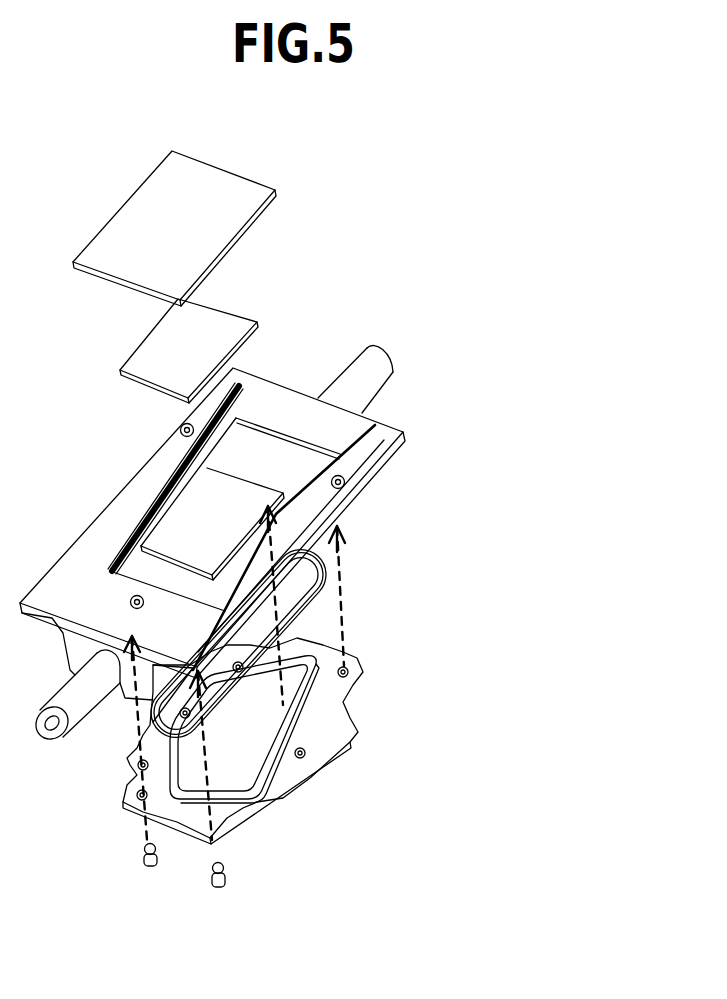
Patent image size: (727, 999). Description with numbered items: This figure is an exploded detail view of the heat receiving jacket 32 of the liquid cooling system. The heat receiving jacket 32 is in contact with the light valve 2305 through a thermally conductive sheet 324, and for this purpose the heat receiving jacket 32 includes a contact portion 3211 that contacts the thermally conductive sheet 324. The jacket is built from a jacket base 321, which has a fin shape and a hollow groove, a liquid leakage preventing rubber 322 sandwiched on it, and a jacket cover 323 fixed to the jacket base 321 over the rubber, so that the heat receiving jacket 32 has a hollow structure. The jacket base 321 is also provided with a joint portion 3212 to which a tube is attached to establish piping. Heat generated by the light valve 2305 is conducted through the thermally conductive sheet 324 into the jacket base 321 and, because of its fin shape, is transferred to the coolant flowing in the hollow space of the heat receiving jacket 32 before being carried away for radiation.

The light valve 2305 is at (225, 220).
The heat receiving jacket 32 is at (312, 579).
The jacket base 321 is at (353, 463).
The contact portion 3211 is at (240, 502).
The joint portion 3212 is at (373, 372).
The liquid leakage preventing rubber 322 is at (305, 613).
The jacket cover 323 is at (319, 762).
The thermally conductive sheet 324 is at (243, 318).